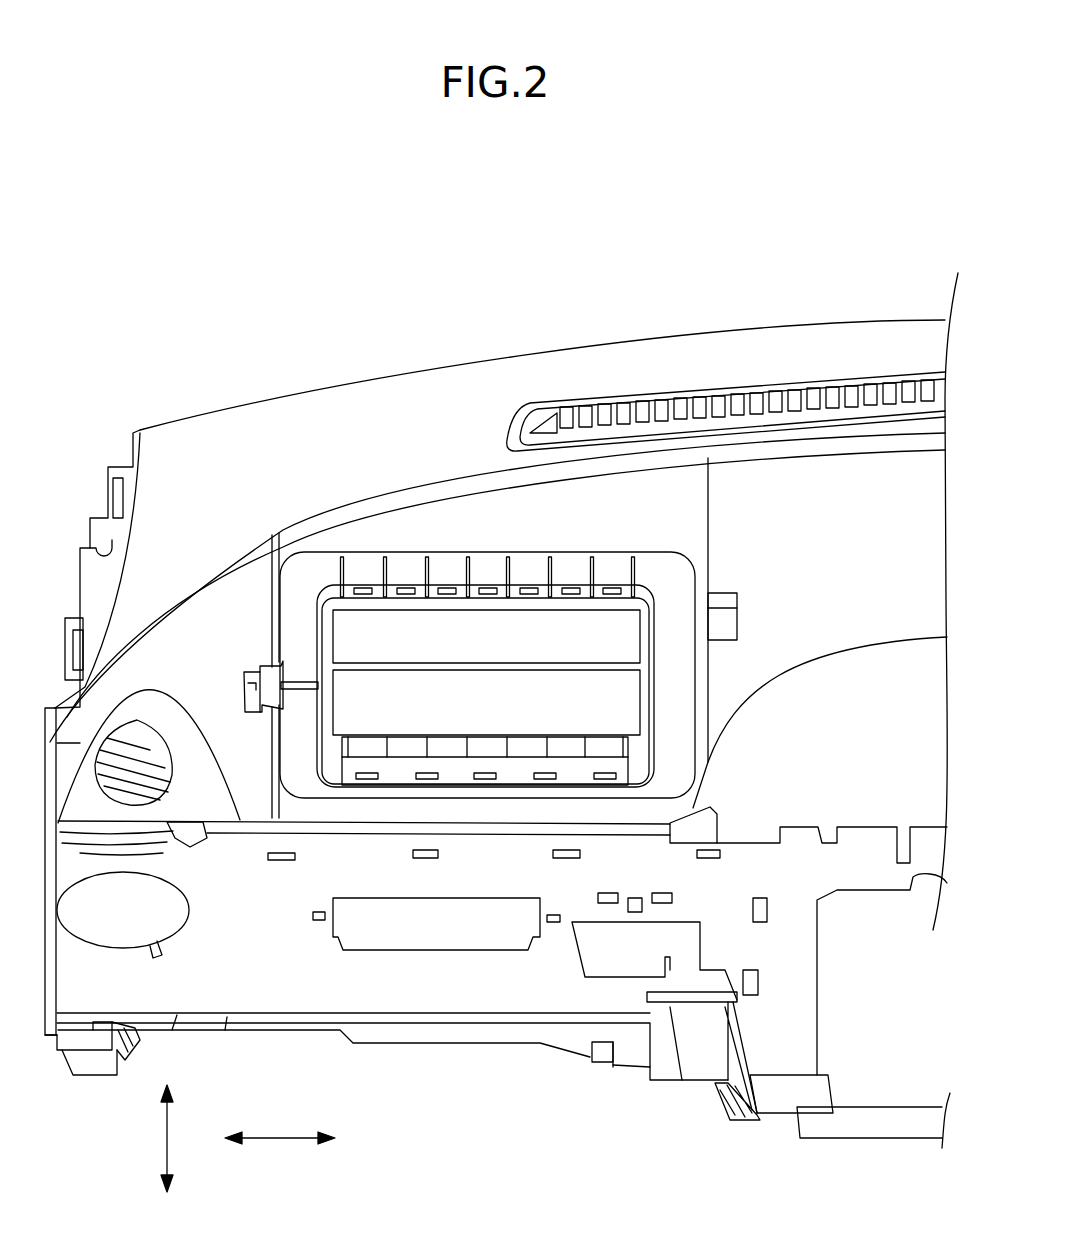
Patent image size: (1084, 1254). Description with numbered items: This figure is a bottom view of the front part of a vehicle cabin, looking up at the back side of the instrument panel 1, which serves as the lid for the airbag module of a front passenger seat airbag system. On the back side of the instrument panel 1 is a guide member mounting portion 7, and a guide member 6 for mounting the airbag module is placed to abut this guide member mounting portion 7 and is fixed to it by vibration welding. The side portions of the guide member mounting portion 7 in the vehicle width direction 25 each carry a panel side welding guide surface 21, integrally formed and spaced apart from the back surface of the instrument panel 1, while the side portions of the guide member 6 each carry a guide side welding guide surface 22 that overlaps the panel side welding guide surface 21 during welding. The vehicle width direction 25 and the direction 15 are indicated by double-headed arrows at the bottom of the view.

The instrument panel 1 is at (851, 312).
The guide member 6 is at (576, 540).
The guide member mounting portion 7 is at (420, 522).
The panel side welding guide surface 21 is at (481, 448).
The guide side welding guide surface 22 is at (259, 668).
The vehicle vertical direction 15 is at (167, 1140).
The vehicle width direction 25 is at (280, 1140).